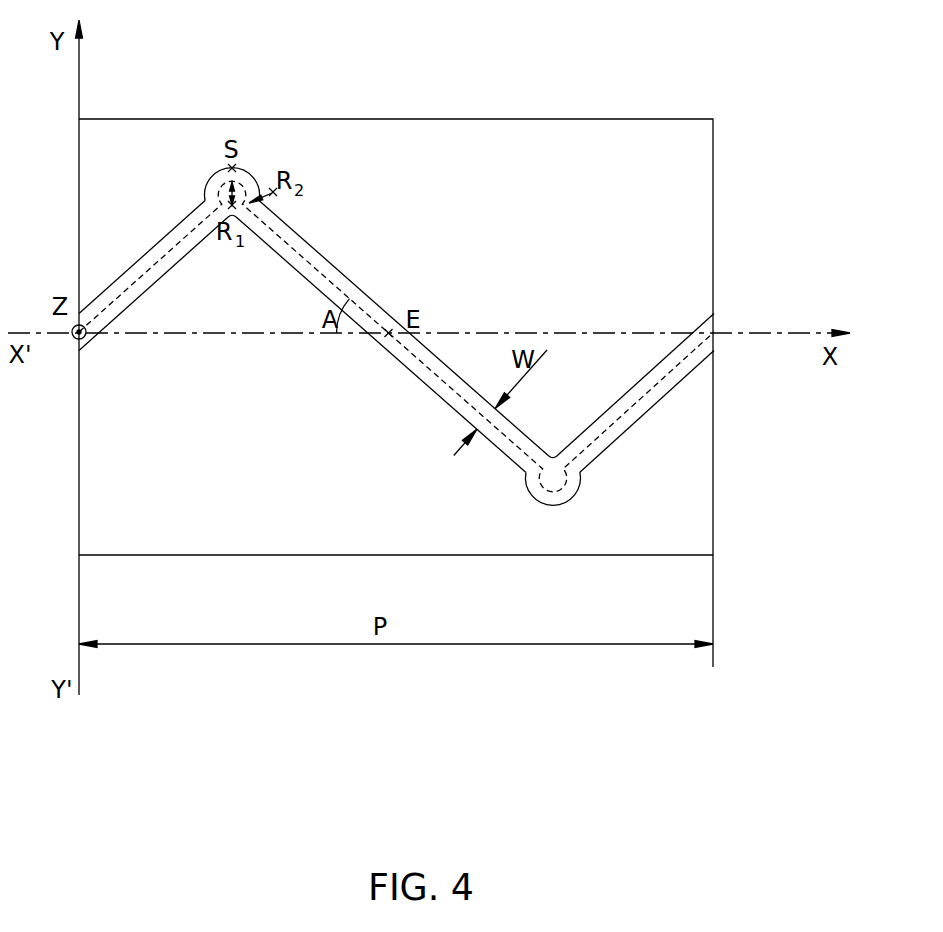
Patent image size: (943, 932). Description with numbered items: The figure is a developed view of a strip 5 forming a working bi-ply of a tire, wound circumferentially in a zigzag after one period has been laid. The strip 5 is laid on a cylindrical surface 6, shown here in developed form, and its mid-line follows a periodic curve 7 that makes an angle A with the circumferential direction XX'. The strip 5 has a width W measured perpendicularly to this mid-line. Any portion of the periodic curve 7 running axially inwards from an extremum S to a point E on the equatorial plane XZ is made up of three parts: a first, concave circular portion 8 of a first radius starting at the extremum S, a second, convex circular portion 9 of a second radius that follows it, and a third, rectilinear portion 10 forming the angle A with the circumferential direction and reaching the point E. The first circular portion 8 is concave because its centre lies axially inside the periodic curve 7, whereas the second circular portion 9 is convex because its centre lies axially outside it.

The strip 5 is at (382, 309).
The cylindrical surface 6 is at (597, 143).
The periodic curve 7 is at (143, 275).
The first concave circular portion 8 is at (227, 183).
The second convex circular portion 9 is at (249, 209).
The third rectilinear portion 10 is at (351, 298).